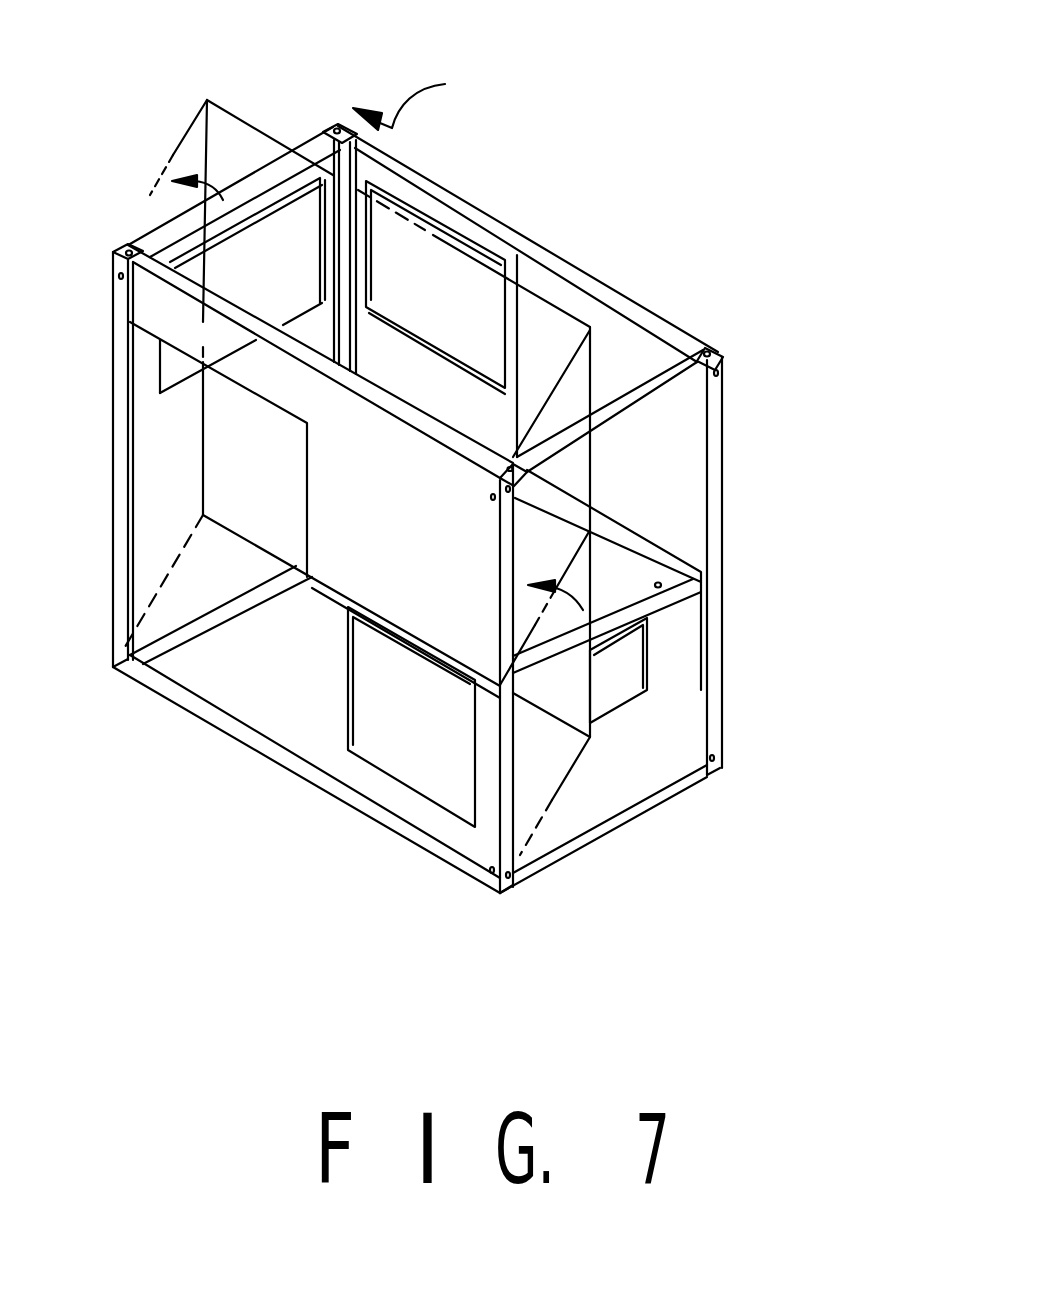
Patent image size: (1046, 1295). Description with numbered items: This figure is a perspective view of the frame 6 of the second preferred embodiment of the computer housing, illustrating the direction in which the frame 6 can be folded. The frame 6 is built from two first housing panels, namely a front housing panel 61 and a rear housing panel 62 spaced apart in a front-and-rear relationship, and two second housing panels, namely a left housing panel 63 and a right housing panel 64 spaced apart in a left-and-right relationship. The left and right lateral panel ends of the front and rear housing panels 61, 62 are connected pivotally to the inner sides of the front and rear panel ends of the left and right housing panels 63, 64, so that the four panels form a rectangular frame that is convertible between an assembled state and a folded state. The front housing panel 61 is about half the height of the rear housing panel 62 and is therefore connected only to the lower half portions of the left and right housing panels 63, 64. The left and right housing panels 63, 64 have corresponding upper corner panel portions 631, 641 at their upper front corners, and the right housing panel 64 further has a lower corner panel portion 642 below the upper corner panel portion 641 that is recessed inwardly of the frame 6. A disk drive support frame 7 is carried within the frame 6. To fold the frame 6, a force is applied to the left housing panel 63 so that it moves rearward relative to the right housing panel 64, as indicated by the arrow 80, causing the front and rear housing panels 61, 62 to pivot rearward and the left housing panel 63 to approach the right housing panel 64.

The frame 6 is at (490, 464).
The disk drive support frame 7 is at (667, 603).
The front housing panel 61 is at (600, 431).
The rear housing panel 62 is at (183, 148).
The left housing panel 63 is at (262, 132).
The right housing panel 64 is at (297, 362).
The arrow 80 is at (425, 91).
The upper corner panel portion 631 is at (673, 448).
The upper corner panel portion 641 is at (420, 627).
The lower corner panel portion 642 is at (418, 760).